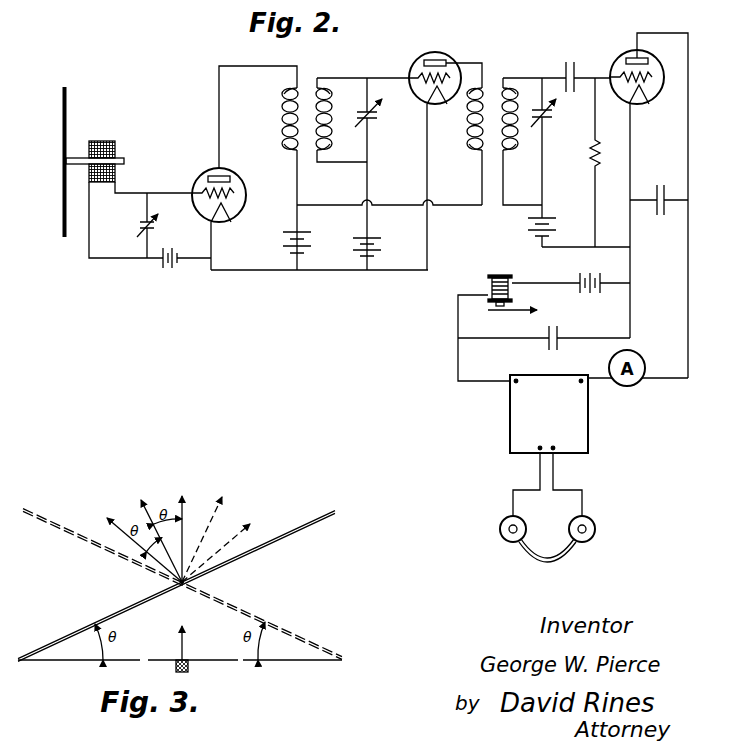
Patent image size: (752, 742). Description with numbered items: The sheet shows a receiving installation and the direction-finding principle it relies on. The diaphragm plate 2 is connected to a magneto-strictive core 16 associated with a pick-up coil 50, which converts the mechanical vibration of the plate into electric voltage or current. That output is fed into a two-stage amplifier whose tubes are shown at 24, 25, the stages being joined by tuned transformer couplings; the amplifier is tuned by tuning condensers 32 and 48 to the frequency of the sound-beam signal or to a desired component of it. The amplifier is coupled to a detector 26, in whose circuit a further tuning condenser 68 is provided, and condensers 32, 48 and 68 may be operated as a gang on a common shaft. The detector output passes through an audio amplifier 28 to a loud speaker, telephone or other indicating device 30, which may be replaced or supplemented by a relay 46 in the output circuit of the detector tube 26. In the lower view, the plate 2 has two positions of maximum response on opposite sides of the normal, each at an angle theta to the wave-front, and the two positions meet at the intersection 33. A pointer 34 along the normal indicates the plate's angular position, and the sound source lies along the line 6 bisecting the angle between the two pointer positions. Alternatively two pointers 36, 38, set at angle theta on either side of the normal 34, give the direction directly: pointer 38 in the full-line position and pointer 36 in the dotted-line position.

In FIG. 2, the plate 2 is at (61, 128).
In FIG. 2, the magneto-strictive core 16 is at (78, 156).
In FIG. 2, the pick-up coil 50 is at (114, 141).
In FIG. 2, the tuning condenser 32 is at (140, 231).
In FIG. 2, the amplifier tube 24 is at (230, 173).
In FIG. 2, the amplifier tube 25 is at (418, 60).
In FIG. 2, the tuning condenser 48 is at (370, 122).
In FIG. 2, the detector 26 is at (627, 58).
In FIG. 2, the tuning condenser 68 is at (547, 120).
In FIG. 2, the relay 46 is at (488, 289).
In FIG. 2, the audio amplifier 28 is at (589, 434).
In FIG. 2, the indicating device 30 is at (566, 553).
In FIG. 3, the point of intersection 33 is at (184, 589).
In FIG. 3, the pointer 34 is at (184, 529).
In FIG. 3, the pointer 36 is at (139, 531).
In FIG. 3, the pointer 38 is at (229, 521).
In FIG. 3, the line bisecting the angle 6 is at (186, 651).